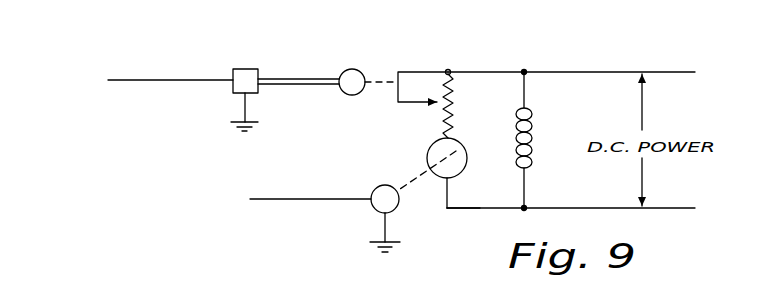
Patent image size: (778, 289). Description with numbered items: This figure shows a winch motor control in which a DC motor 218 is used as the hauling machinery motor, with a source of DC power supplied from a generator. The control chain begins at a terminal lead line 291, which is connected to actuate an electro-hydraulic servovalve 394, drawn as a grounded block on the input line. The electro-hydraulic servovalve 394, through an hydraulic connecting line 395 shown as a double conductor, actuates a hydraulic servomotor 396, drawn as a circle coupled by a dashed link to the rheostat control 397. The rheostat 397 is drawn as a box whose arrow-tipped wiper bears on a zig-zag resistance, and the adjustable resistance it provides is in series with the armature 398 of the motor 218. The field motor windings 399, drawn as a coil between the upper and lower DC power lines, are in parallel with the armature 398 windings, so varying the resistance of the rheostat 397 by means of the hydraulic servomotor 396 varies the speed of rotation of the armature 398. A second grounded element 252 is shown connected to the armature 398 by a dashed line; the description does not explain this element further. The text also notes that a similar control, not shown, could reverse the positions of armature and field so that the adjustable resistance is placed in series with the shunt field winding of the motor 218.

The terminal lead line 291 is at (143, 83).
The electro-hydraulic servovalve 394 is at (242, 66).
The hydraulic connecting line 395 is at (311, 58).
The hydraulic servomotor 396 is at (364, 67).
The rheostat control 397 is at (404, 102).
The armature 398 is at (426, 156).
The field motor windings 399 is at (538, 124).
The grounded input device 252 is at (372, 207).
The motor 218 is at (460, 212).